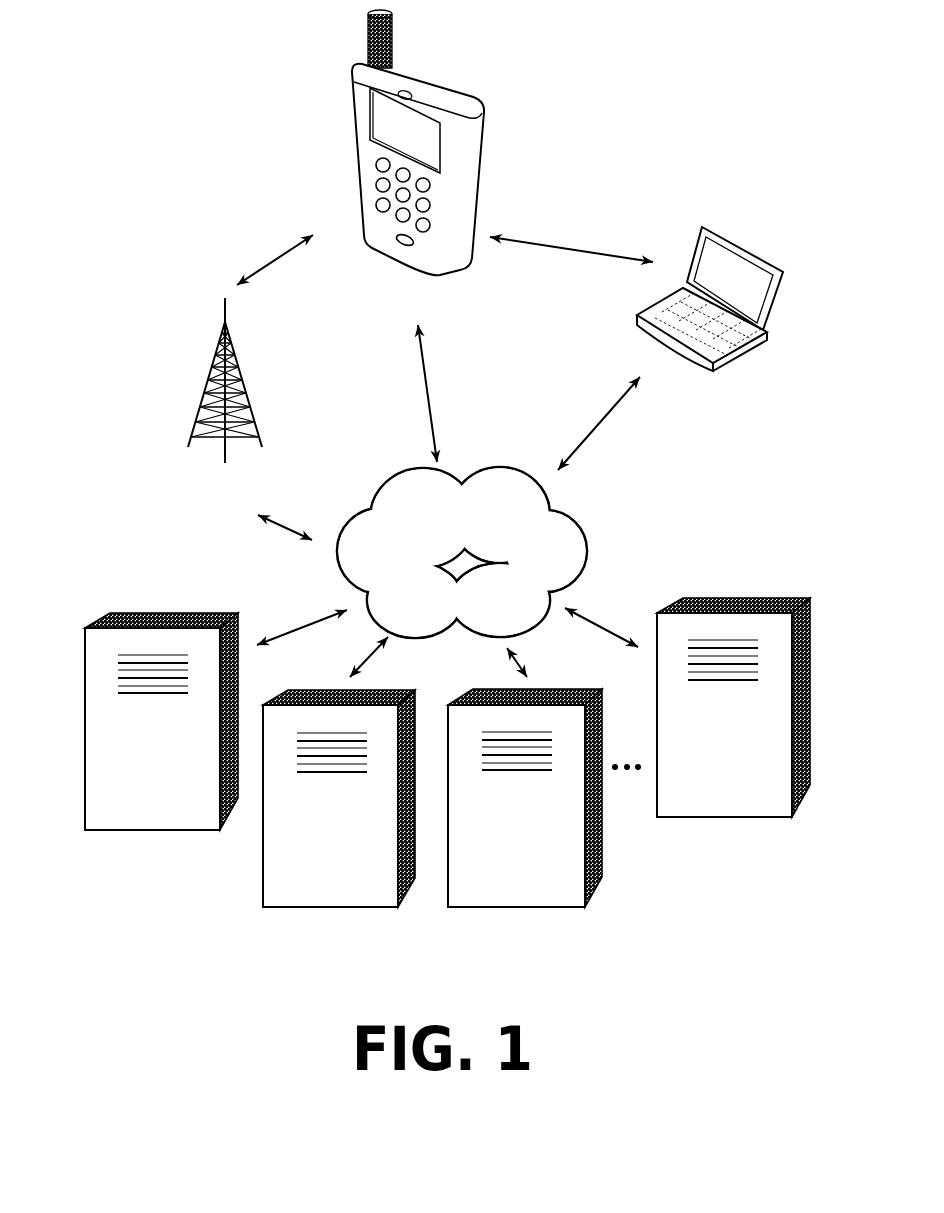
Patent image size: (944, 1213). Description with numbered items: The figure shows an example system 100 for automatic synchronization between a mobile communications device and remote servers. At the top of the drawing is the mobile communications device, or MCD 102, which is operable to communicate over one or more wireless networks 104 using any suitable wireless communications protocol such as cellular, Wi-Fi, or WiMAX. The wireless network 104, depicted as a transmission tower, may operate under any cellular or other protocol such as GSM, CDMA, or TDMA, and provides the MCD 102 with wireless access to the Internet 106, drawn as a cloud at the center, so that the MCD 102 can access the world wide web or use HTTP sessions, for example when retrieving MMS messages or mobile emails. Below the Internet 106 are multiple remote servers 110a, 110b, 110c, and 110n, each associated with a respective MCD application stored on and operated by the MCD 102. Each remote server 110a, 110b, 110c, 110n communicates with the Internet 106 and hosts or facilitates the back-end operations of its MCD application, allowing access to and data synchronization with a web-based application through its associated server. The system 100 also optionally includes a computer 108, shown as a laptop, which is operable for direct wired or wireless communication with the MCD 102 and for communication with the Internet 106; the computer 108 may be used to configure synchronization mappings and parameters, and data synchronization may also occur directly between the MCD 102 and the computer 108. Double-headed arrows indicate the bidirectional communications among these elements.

The system 100 is at (130, 968).
The MCD 102 is at (485, 155).
The wireless network 104 is at (247, 393).
The Internet 106 is at (462, 552).
The computer 108 is at (770, 325).
The remote server 110a is at (161, 721).
The remote server 110b is at (339, 798).
The remote server 110c is at (525, 798).
The remote server 110n is at (733, 707).